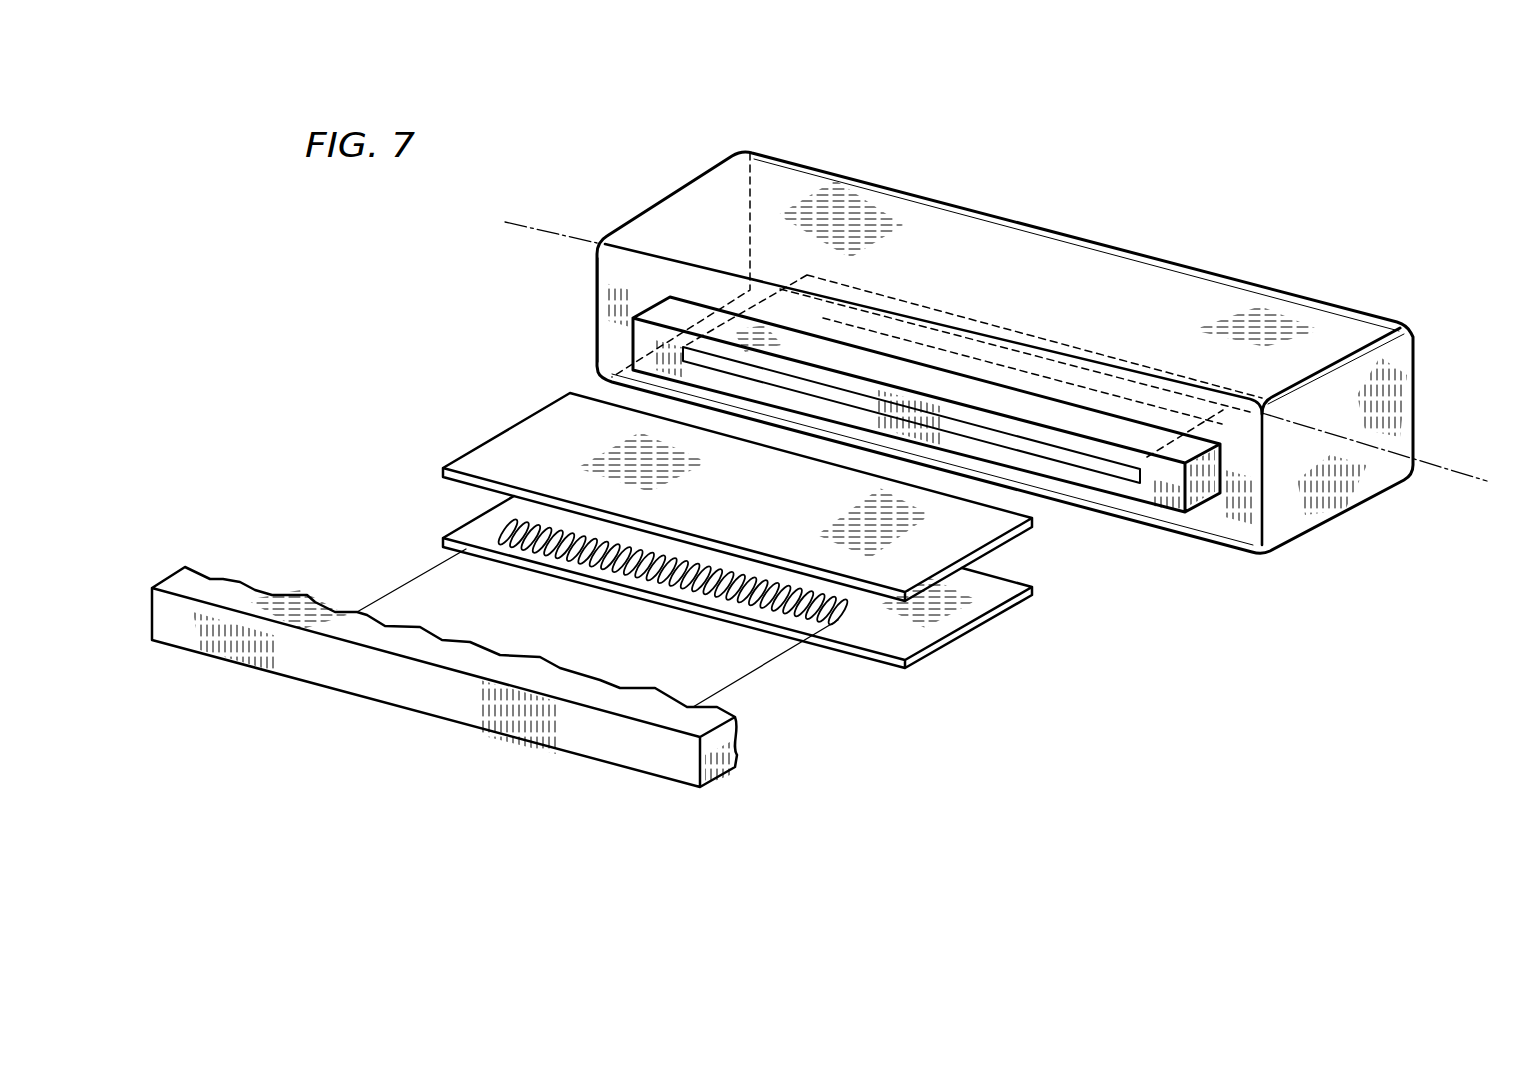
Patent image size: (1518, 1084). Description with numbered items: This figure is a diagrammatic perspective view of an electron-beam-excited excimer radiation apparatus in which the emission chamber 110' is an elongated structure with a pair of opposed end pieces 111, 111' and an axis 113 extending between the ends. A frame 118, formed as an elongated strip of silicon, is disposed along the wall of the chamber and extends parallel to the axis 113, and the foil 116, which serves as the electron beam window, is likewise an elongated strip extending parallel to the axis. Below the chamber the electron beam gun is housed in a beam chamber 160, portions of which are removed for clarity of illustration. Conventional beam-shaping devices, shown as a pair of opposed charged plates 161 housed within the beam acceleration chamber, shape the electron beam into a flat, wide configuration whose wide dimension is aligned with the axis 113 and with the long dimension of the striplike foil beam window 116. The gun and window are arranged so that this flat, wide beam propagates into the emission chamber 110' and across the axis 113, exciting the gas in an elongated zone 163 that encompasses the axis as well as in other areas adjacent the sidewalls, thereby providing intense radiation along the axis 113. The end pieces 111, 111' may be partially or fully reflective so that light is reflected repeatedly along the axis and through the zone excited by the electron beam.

The emission chamber 110' is at (1005, 352).
The end piece 111 is at (551, 310).
The end piece 111' is at (1350, 320).
The axis 113 is at (1443, 467).
The foil 116 is at (1108, 470).
The frame 118 is at (633, 342).
The beam chamber 160 is at (720, 777).
The charged plates 161 is at (517, 440).
The elongated zone 163 is at (928, 272).